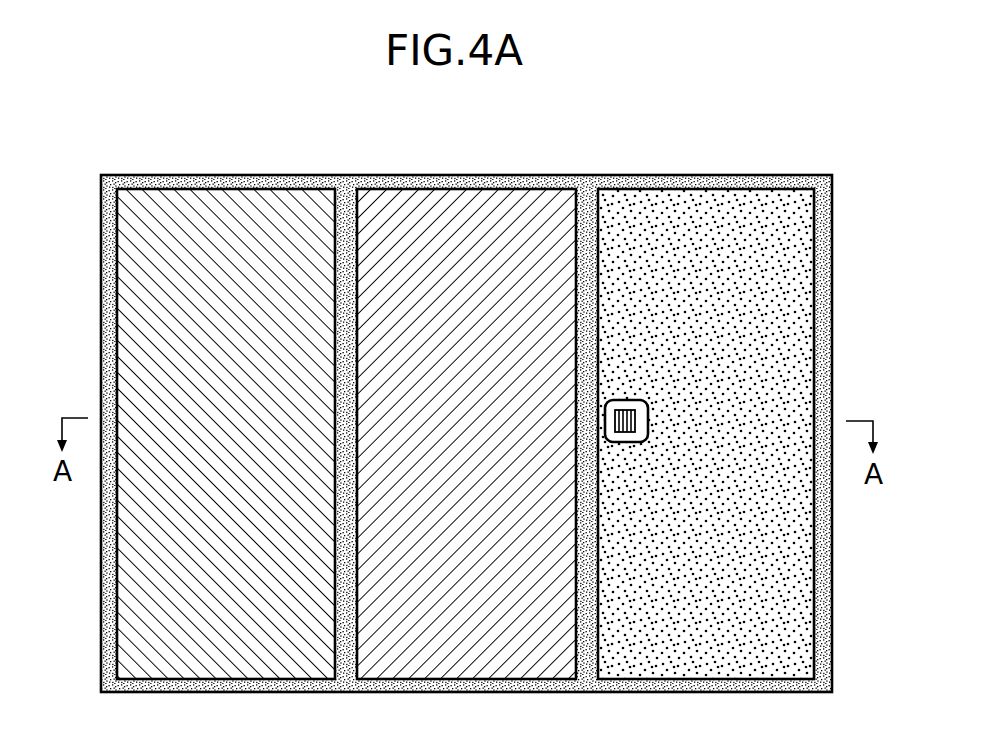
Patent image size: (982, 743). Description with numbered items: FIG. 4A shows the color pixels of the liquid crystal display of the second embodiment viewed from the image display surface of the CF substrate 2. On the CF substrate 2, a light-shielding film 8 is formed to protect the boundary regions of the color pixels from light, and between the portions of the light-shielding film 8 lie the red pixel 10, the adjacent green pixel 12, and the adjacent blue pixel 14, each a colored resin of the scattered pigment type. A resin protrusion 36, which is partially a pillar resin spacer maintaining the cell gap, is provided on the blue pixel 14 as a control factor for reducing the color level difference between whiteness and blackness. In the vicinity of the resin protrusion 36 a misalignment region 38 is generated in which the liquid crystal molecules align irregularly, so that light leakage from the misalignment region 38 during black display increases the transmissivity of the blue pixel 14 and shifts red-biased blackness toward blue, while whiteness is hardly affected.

The CF substrate 2 is at (465, 398).
The light-shielding film 8 is at (96, 283).
The red pixel 10 is at (232, 217).
The green pixel 12 is at (455, 217).
The blue pixel 14 is at (700, 223).
The resin protrusion 36 is at (628, 418).
The misalignment region 38 is at (745, 449).